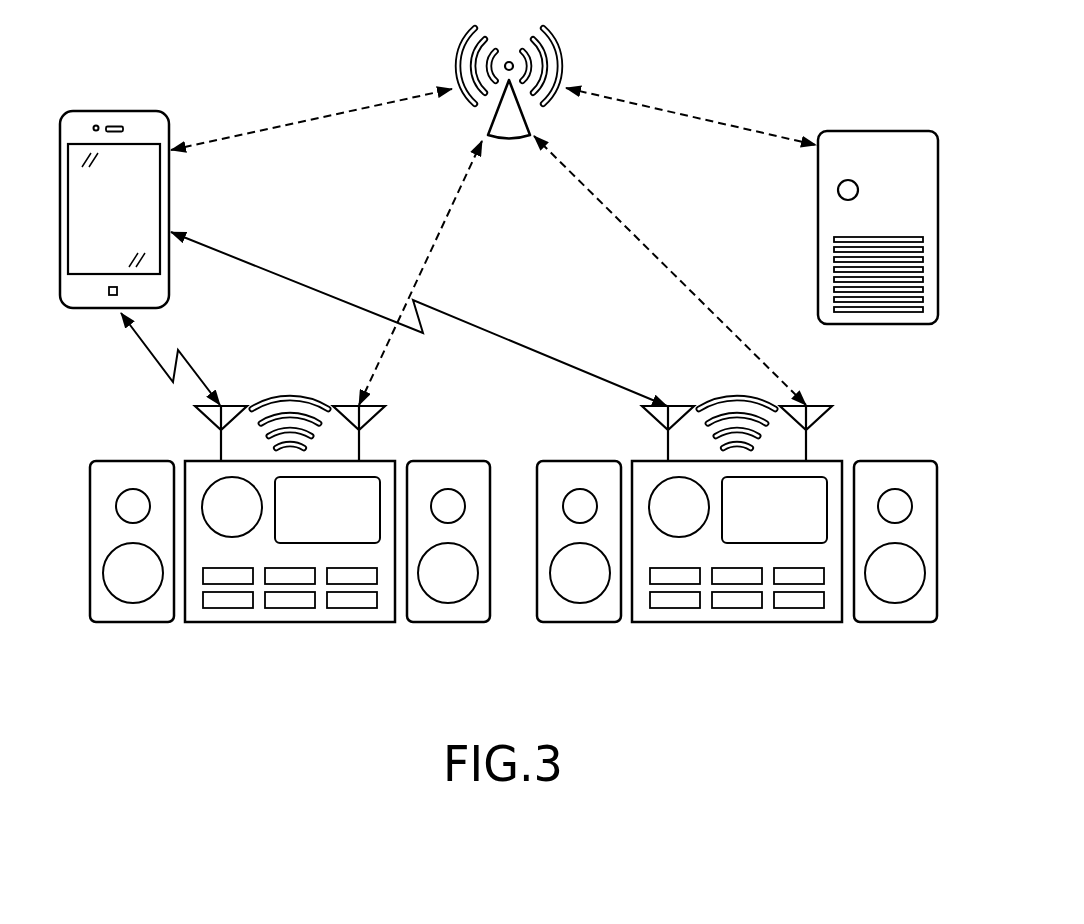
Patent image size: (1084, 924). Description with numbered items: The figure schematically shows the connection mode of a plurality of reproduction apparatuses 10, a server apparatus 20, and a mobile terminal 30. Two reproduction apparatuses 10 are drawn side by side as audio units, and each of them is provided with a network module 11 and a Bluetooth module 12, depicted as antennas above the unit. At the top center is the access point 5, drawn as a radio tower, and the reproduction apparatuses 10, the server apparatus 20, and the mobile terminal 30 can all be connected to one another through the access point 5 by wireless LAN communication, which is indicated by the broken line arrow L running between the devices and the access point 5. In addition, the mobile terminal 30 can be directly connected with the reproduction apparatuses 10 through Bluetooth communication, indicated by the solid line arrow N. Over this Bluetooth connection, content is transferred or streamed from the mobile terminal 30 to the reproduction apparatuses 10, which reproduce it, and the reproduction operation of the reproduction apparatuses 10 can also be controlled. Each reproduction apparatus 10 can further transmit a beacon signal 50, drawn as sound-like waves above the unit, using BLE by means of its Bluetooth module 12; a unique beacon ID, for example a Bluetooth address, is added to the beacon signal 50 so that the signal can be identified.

The mobile terminal 30 is at (117, 111).
The server apparatus 20 is at (878, 131).
The access point 5 is at (509, 140).
The reproduction apparatus 10 is at (290, 622).
The network module 11 is at (359, 443).
The Bluetooth module 12 is at (221, 443).
The beacon signal 50 is at (290, 398).
The broken line arrow L is at (315, 118).
The solid line arrow N is at (323, 290).